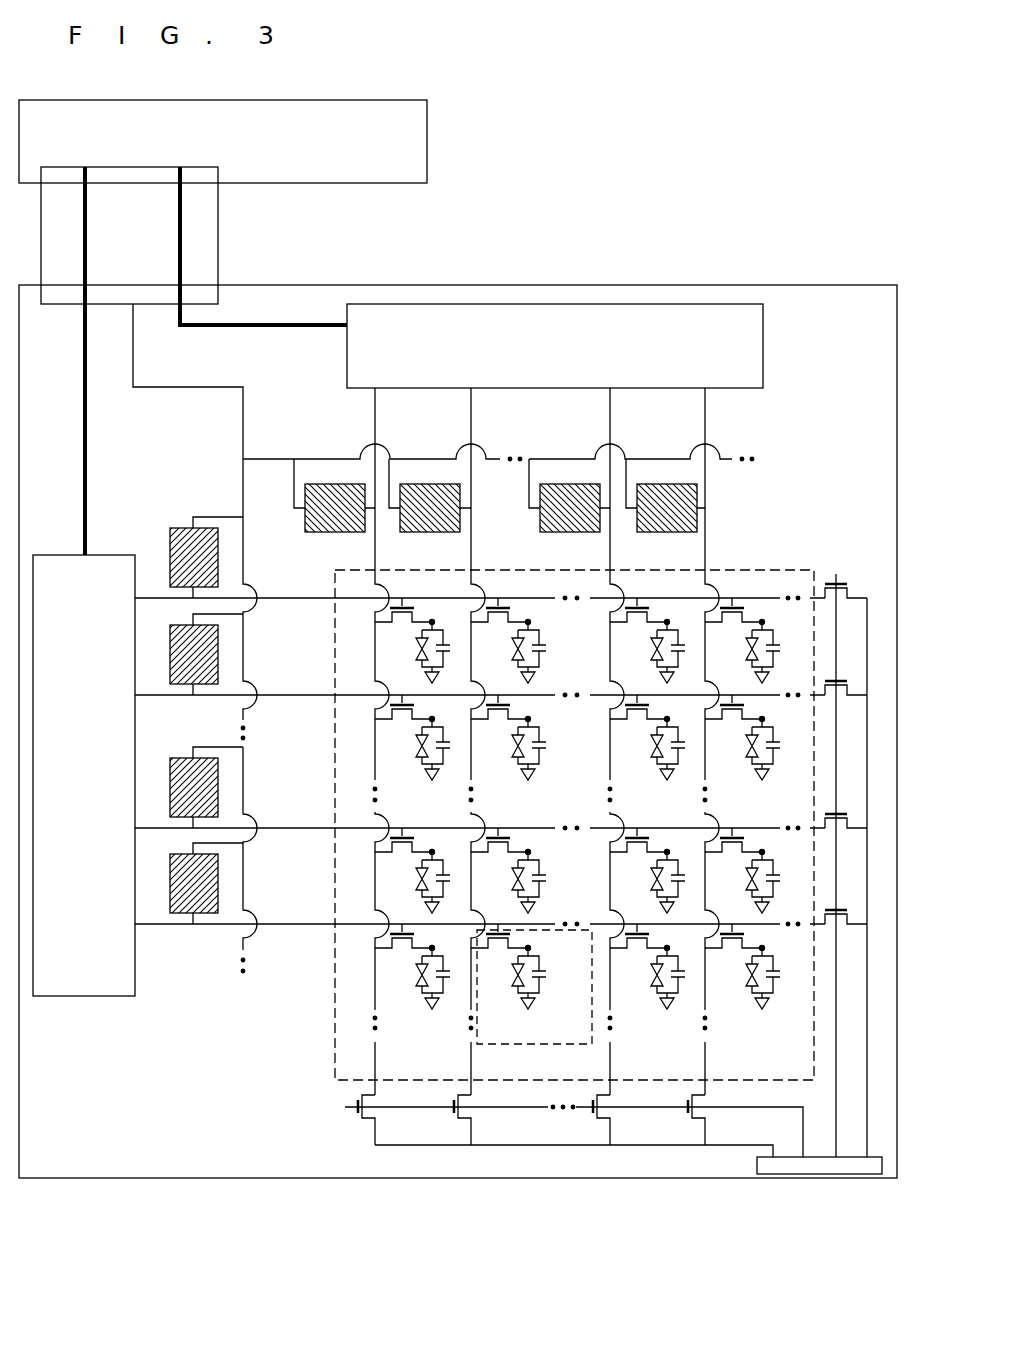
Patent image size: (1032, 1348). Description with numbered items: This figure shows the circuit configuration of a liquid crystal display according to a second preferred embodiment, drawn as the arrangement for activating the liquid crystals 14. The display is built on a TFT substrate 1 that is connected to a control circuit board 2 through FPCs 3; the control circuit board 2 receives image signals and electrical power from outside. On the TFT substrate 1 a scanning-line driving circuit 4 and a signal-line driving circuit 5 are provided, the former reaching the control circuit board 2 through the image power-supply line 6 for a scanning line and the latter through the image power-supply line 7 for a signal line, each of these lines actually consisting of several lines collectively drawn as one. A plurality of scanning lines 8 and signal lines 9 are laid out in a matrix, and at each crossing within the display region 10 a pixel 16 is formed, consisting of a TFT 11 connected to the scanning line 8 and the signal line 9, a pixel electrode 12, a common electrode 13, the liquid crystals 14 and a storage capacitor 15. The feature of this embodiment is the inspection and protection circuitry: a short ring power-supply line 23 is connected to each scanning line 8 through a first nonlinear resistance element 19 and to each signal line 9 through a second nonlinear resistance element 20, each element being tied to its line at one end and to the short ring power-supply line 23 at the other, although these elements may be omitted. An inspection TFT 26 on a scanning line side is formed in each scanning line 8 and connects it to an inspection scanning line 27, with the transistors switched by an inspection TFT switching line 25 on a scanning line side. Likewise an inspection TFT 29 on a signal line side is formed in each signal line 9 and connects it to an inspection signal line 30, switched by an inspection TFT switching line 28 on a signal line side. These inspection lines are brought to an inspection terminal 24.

The TFT substrate 1 is at (515, 1179).
The control circuit board 2 is at (427, 145).
The FPCs 3 is at (218, 217).
The scanning-line driving circuit 4 is at (55, 555).
The signal-line driving circuit 5 is at (556, 305).
The image power-supply line for a scanning line 6 is at (83, 412).
The image power-supply line for a signal line 7 is at (302, 324).
The scanning line 8 is at (295, 925).
The signal line 9 is at (707, 540).
The display region 10 is at (335, 1041).
The TFT 11 is at (500, 952).
The pixel electrode 12 is at (531, 951).
The common electrode 13 is at (535, 1003).
The liquid crystals 14 is at (519, 980).
The storage capacitor 15 is at (546, 974).
The pixel 16 is at (540, 1045).
The nonlinear resistance element 19 is at (183, 529).
The nonlinear resistance element 20 is at (310, 533).
The short ring power-supply line 23 is at (195, 388).
The inspection terminal 24 is at (757, 1165).
The inspection TFT switching line on a scanning line side 25 is at (838, 876).
The inspection TFT on a scanning line side 26 is at (840, 680).
The inspection scanning line 27 is at (868, 773).
The inspection TFT switching line on a signal line side 28 is at (622, 1110).
The inspection TFT on a signal line side 29 is at (470, 1115).
The inspection signal line 30 is at (535, 1147).